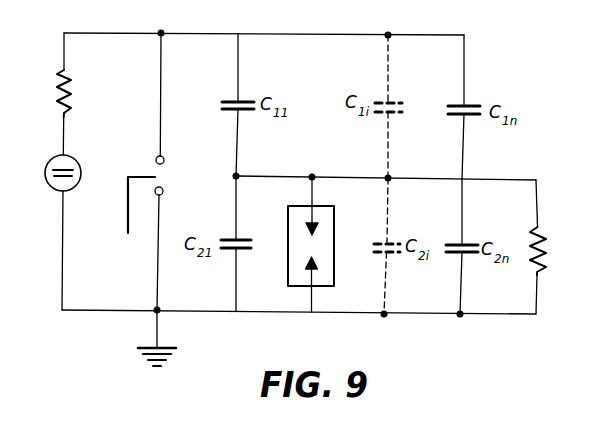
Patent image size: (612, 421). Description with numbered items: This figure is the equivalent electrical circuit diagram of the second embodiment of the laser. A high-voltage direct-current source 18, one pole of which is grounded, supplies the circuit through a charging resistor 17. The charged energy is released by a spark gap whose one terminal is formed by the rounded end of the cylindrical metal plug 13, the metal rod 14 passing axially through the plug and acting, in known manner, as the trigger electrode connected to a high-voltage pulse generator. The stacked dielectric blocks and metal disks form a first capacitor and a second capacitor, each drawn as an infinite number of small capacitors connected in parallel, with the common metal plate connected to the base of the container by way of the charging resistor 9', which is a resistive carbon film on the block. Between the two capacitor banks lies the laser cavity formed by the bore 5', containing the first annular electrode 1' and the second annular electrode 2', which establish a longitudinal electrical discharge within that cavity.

The charging resistor 17 is at (56, 90).
The high-voltage direct-current source 18 is at (45, 176).
The cylindrical metal plug 13 is at (165, 160).
The metal rod 14 is at (126, 219).
The first annular electrode 1' is at (334, 208).
The second annular electrode 2' is at (334, 284).
The bore 5' is at (295, 246).
The charging resistor 9' is at (551, 247).